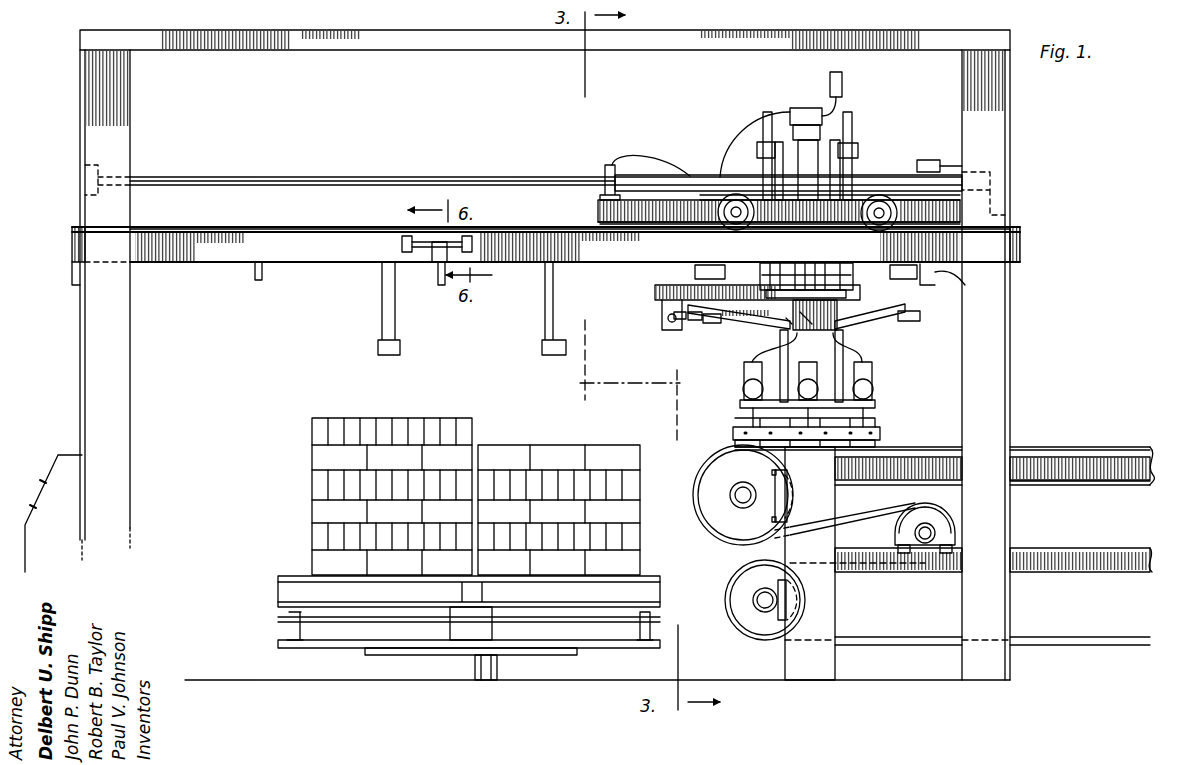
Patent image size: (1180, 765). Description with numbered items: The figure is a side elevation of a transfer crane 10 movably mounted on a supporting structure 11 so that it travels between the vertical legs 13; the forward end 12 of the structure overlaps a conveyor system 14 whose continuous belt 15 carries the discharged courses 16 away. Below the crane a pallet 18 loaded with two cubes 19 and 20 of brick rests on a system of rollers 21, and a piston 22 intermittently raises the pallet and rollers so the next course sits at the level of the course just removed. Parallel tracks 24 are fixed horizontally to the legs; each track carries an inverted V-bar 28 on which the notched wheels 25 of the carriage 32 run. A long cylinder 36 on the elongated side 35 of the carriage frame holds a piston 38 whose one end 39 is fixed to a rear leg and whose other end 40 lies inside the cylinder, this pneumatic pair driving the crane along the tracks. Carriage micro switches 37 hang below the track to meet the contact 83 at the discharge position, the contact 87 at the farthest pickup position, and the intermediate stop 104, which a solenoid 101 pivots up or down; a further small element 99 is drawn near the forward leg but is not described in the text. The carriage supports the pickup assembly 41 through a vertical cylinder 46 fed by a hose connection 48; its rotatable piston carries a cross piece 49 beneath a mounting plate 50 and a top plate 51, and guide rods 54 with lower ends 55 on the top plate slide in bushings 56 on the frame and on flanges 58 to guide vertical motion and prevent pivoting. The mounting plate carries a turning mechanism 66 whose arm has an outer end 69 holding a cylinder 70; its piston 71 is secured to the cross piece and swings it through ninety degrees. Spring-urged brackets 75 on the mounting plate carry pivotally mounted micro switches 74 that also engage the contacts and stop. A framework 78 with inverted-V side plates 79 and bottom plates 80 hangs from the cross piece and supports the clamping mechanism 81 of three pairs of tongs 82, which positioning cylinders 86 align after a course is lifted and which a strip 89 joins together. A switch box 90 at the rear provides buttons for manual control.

The transfer crane 10 is at (712, 140).
The supporting structure 11 is at (142, 270).
The forward end 12 is at (1012, 356).
The vertical legs 13 is at (130, 432).
The conveyor system 14 is at (1132, 456).
The continuous belt 15 is at (1065, 447).
The discharged courses 16 is at (885, 441).
The pallet 18 is at (278, 584).
The cube 19 is at (312, 460).
The cube 20 is at (628, 496).
The rollers 21 is at (295, 622).
The piston 22 is at (485, 667).
The parallel tracks 24 is at (318, 240).
The wheels 25 is at (726, 200).
The inverted V-bar 28 is at (254, 228).
The carriage 32 is at (848, 210).
The elongated side 35 is at (598, 203).
The long cylinder 36 is at (632, 175).
The carriage micro switches 37 is at (701, 268).
The piston 38 is at (414, 176).
The piston end 39 is at (85, 180).
The piston end 40 is at (580, 177).
The pickup assembly 41 is at (858, 337).
The vertical cylinder 46 is at (806, 148).
The hose connection 48 is at (746, 136).
The cross piece 49 is at (842, 317).
The mounting plate 50 is at (768, 325).
The top plate 51 is at (863, 270).
The guide rods 54 is at (772, 135).
The lower ends 55 is at (775, 268).
The bushings 56 is at (858, 150).
The flanges 58 is at (845, 138).
The turning mechanism 66 is at (660, 323).
The outer end 69 is at (655, 296).
The cylinder 70 is at (678, 322).
The piston 71 is at (700, 322).
The pivotally mounted micro switches 74 is at (920, 317).
The brackets 75 is at (720, 322).
The framework 78 is at (842, 358).
The side plates 79 is at (758, 355).
The bottom plates 80 is at (745, 408).
The clamping mechanism 81 is at (875, 388).
The tongs 82 is at (866, 405).
The contact 83 is at (965, 285).
The positioning cylinders 86 is at (742, 390).
The contact 87 is at (265, 274).
The strip 89 is at (735, 430).
The switch box 90 is at (66, 488).
The switch 99 is at (928, 160).
The solenoid 101 is at (438, 266).
The intermediate stop 104 is at (445, 272).